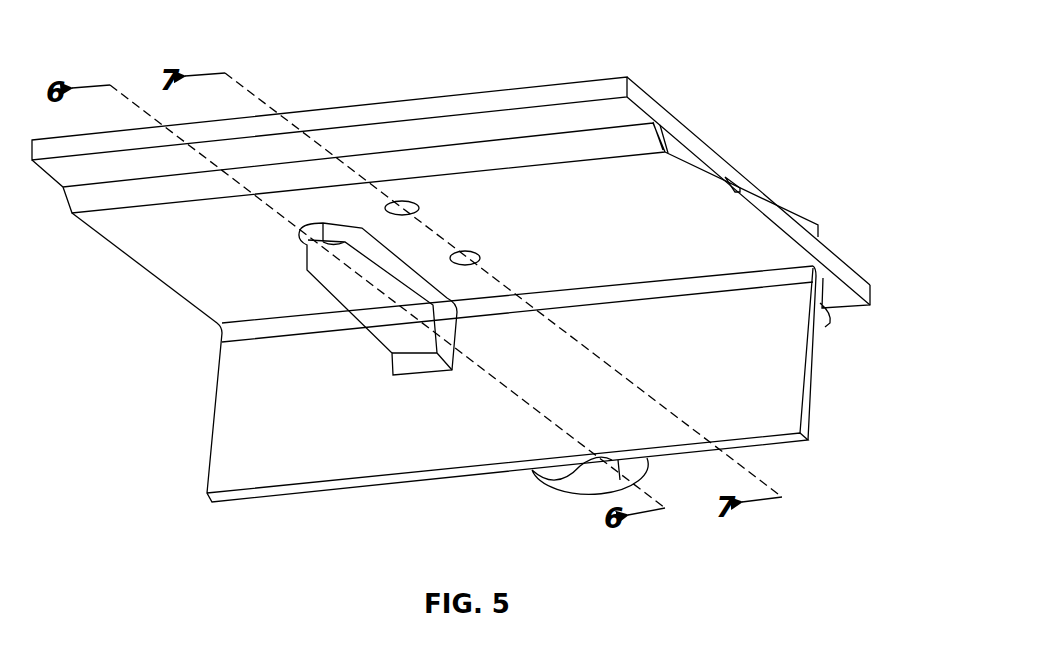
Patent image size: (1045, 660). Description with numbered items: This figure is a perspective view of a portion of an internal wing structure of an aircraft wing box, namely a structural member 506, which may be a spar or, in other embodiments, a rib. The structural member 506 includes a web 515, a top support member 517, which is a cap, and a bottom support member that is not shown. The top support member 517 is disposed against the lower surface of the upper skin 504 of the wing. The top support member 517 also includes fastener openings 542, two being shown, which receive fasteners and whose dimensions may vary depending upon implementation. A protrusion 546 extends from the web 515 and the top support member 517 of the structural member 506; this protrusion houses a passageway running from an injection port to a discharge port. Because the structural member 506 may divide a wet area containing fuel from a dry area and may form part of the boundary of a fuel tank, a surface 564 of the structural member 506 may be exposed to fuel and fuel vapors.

The upper skin 504 is at (785, 178).
The structural member 506 is at (489, 284).
The web 515 is at (826, 426).
The top support member 517 is at (853, 272).
The fastener openings 542 is at (403, 202).
The protrusion 546 is at (328, 273).
The surface 564 is at (503, 423).